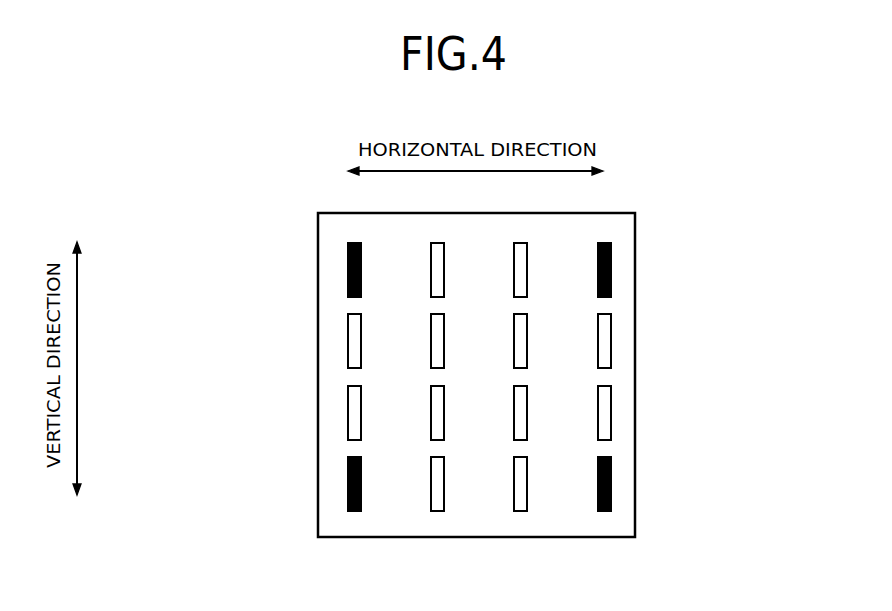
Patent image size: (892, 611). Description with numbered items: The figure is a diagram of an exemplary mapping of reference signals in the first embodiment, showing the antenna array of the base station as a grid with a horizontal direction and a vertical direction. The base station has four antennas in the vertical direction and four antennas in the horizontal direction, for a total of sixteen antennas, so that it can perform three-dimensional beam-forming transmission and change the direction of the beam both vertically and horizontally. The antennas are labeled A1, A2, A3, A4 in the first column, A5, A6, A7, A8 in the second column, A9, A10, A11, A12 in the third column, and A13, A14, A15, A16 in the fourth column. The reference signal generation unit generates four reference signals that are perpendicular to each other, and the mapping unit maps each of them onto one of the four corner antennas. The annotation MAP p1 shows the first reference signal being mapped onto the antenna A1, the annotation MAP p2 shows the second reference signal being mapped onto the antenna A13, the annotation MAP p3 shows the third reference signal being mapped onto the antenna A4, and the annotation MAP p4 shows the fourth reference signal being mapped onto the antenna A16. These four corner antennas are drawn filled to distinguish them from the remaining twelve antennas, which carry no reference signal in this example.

The antenna A1 is at (361, 266).
The antenna A2 is at (361, 337).
The antenna A3 is at (361, 409).
The antenna A4 is at (361, 480).
The antenna A5 is at (444, 266).
The antenna A6 is at (444, 337).
The antenna A7 is at (444, 409).
The antenna A8 is at (444, 480).
The antenna A9 is at (527, 266).
The antenna A10 is at (527, 337).
The antenna A11 is at (527, 409).
The antenna A12 is at (527, 480).
The antenna A13 is at (611, 266).
The antenna A14 is at (611, 337).
The antenna A15 is at (611, 409).
The antenna A16 is at (611, 480).
The mapping of reference signal p1 MAP p1 is at (343, 258).
The mapping of reference signal p2 MAP p2 is at (616, 253).
The mapping of reference signal p3 MAP p3 is at (343, 478).
The mapping of reference signal p4 MAP p4 is at (616, 502).